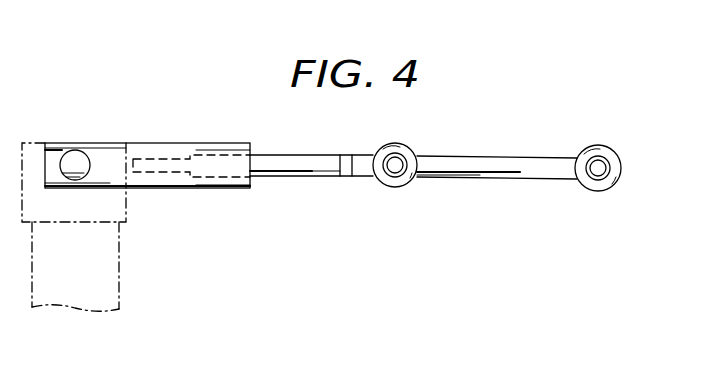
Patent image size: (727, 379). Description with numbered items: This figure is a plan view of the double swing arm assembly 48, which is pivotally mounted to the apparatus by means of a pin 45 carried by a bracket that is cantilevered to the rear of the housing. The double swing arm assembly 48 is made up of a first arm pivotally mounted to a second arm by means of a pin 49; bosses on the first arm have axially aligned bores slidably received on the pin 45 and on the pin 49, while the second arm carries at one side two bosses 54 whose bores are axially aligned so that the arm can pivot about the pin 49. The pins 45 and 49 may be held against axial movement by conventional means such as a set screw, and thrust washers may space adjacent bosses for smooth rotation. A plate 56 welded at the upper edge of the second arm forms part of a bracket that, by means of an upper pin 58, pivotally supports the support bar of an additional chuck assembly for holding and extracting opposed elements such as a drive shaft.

The pin 45 is at (598, 165).
The double swing arm assembly 48 is at (387, 193).
The pin 49 is at (397, 162).
The bosses 54 is at (403, 183).
The plate 56 is at (187, 148).
The upper pin 58 is at (76, 158).